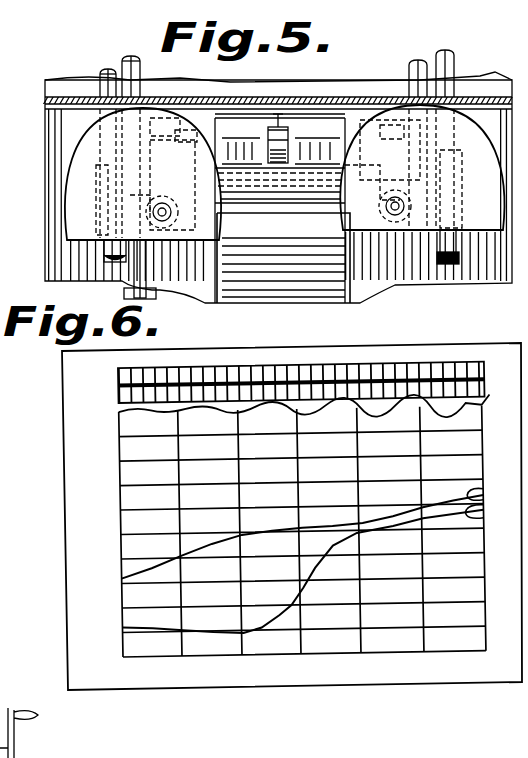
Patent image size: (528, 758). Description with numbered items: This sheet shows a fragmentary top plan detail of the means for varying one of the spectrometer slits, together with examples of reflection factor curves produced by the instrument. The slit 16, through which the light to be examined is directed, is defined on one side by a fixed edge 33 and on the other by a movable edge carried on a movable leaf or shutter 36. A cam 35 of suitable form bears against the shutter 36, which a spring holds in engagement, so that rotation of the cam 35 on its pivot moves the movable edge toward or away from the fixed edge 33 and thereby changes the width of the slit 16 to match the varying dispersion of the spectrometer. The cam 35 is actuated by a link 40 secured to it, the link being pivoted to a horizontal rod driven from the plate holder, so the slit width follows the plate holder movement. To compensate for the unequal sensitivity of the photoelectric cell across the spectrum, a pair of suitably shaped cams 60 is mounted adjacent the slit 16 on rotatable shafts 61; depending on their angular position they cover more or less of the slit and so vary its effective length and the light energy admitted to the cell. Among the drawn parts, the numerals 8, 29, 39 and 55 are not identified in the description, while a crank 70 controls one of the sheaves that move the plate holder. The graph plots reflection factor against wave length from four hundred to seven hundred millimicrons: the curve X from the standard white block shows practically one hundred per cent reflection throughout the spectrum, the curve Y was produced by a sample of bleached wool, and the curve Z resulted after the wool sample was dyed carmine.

In FIG. 5, the frame 8 is at (4, 129).
In FIG. 5, the slit 16 is at (282, 214).
In FIG. 6, the chart 29 is at (246, 690).
In FIG. 5, the fixed edge 33 is at (282, 210).
In FIG. 5, the cam 35 is at (290, 150).
In FIG. 5, the shutter 36 is at (266, 147).
In FIG. 5, the bar 39 is at (298, 182).
In FIG. 6, the link 40 is at (261, 516).
In FIG. 5, the bolt 55 is at (229, 264).
In FIG. 5, the cams 60 is at (284, 172).
In FIG. 5, the rotatable shafts 61 is at (160, 205).
In FIG. 6, the crank 70 is at (14, 738).
In FIG. 6, the curve X is at (311, 392).
In FIG. 6, the curve Y is at (301, 538).
In FIG. 6, the curve Z is at (311, 570).